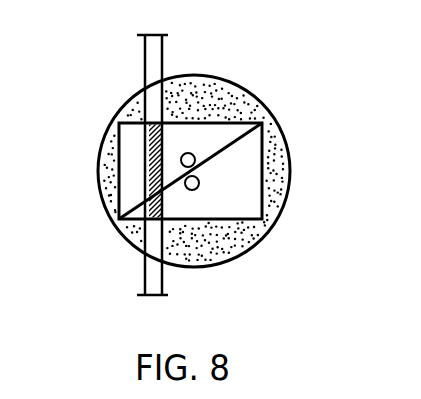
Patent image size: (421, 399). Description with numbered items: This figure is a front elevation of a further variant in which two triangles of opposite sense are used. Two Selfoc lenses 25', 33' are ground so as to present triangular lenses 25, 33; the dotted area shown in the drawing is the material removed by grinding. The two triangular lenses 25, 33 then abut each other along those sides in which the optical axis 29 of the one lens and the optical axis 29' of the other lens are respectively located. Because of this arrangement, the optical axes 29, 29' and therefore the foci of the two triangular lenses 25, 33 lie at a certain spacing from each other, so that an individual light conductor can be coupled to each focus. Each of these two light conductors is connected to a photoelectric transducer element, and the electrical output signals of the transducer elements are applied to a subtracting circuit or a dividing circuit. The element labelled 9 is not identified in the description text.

The shaft 9 is at (145, 52).
The triangular lens 25 is at (207, 126).
The Selfoc lens 25' is at (153, 149).
The optical axis 29 is at (98, 163).
The optical axis 29' is at (277, 200).
The triangular lens 33 is at (234, 171).
The Selfoc lens 33' is at (215, 270).